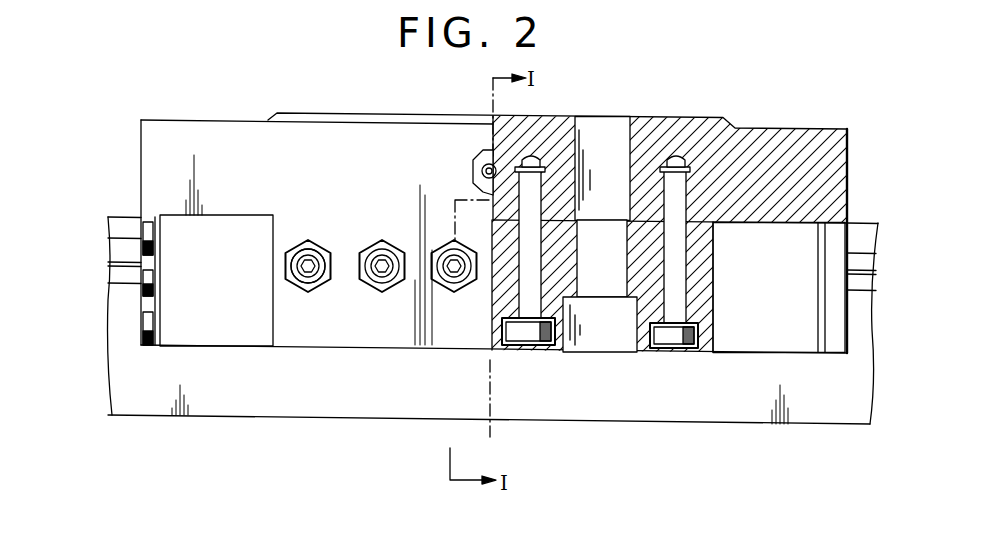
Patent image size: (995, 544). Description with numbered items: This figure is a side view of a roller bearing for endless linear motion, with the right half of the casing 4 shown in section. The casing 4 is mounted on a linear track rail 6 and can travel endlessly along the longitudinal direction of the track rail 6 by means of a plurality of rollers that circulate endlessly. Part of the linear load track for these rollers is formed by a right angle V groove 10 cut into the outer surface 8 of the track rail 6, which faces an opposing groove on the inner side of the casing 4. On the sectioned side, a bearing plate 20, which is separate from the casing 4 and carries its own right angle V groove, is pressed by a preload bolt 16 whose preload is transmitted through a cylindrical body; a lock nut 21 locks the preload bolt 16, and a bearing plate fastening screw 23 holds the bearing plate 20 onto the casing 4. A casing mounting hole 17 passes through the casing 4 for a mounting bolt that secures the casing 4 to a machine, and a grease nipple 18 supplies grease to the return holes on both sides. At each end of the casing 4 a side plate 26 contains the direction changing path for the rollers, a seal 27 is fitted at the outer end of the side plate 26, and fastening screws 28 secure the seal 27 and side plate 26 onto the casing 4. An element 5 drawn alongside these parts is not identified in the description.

The casing 4 is at (790, 126).
The holder body 5 is at (343, 332).
The track rail 6 is at (714, 410).
The outer surface 8 is at (856, 400).
The right angle V groove 10 is at (864, 262).
The preload bolt 16 is at (303, 262).
The casing mounting hole 17 is at (605, 130).
The grease nipple 18 is at (472, 165).
The bearing plate 20 is at (637, 282).
The lock nut 21 is at (323, 257).
The nut 23 is at (672, 335).
The side plate 26 is at (228, 332).
The seal 27 is at (163, 347).
The shim 28 is at (143, 340).